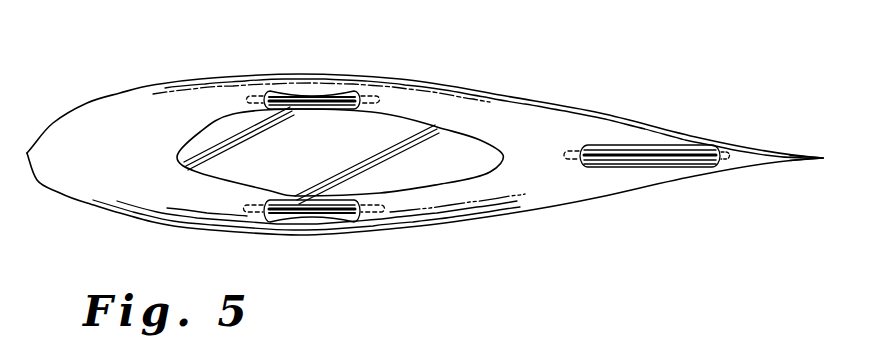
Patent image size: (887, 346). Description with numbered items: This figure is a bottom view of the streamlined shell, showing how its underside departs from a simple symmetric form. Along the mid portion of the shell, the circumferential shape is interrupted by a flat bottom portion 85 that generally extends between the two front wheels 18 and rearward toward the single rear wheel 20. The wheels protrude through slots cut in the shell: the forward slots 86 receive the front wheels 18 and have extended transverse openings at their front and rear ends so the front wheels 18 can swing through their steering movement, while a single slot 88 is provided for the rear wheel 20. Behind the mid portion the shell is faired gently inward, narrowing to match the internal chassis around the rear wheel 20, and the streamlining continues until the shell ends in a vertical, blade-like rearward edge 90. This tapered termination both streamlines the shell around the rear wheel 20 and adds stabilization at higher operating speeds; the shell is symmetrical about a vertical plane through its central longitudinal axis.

The front wheels 18 is at (328, 97).
The rear wheel 20 is at (611, 157).
The flat bottom portion 85 is at (439, 140).
The forward slots 86 is at (268, 90).
The rear slot 88 is at (690, 146).
The rearward edge 90 is at (823, 157).